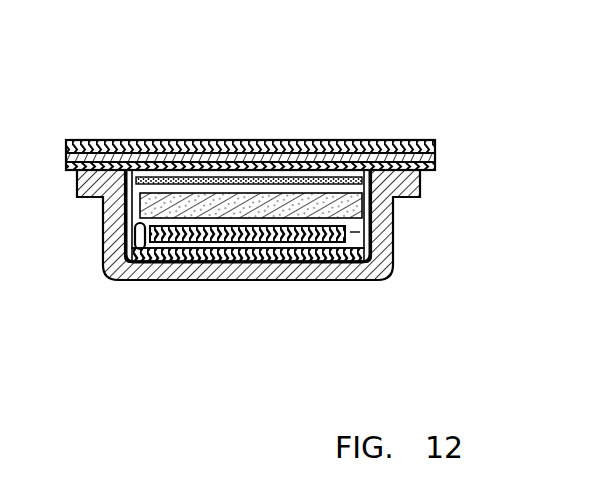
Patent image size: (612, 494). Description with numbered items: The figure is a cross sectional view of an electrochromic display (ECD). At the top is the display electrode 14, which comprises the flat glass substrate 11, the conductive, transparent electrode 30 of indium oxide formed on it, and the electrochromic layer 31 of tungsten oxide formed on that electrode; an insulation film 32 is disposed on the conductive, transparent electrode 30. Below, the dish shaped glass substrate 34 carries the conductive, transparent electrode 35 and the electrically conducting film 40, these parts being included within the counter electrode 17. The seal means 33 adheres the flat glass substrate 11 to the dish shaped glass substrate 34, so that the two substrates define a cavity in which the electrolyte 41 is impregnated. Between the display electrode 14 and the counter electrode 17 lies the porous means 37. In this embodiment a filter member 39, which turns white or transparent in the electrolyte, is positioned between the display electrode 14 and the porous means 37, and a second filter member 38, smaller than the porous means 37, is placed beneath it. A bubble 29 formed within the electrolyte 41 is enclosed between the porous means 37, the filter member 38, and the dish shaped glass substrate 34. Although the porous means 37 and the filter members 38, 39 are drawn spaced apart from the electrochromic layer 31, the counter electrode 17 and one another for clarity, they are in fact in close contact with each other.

The display electrode 14 is at (250, 109).
The flat glass substrate 11 is at (108, 140).
The conductive, transparent electrode 30 is at (150, 140).
The electrochromic layer 31 is at (93, 90).
The filter member 39 is at (272, 180).
The porous means 37 is at (313, 195).
The insulation film 32 is at (437, 170).
The seal means 33 is at (423, 180).
The electrolyte 41 is at (368, 229).
The dish shaped glass substrate 34 is at (392, 246).
The conductive, transparent electrode 35 is at (388, 276).
The electrically conducting film 40 is at (350, 280).
The counter electrode 17 is at (488, 283).
The bubble 29 is at (140, 280).
The filter member 38 is at (243, 242).